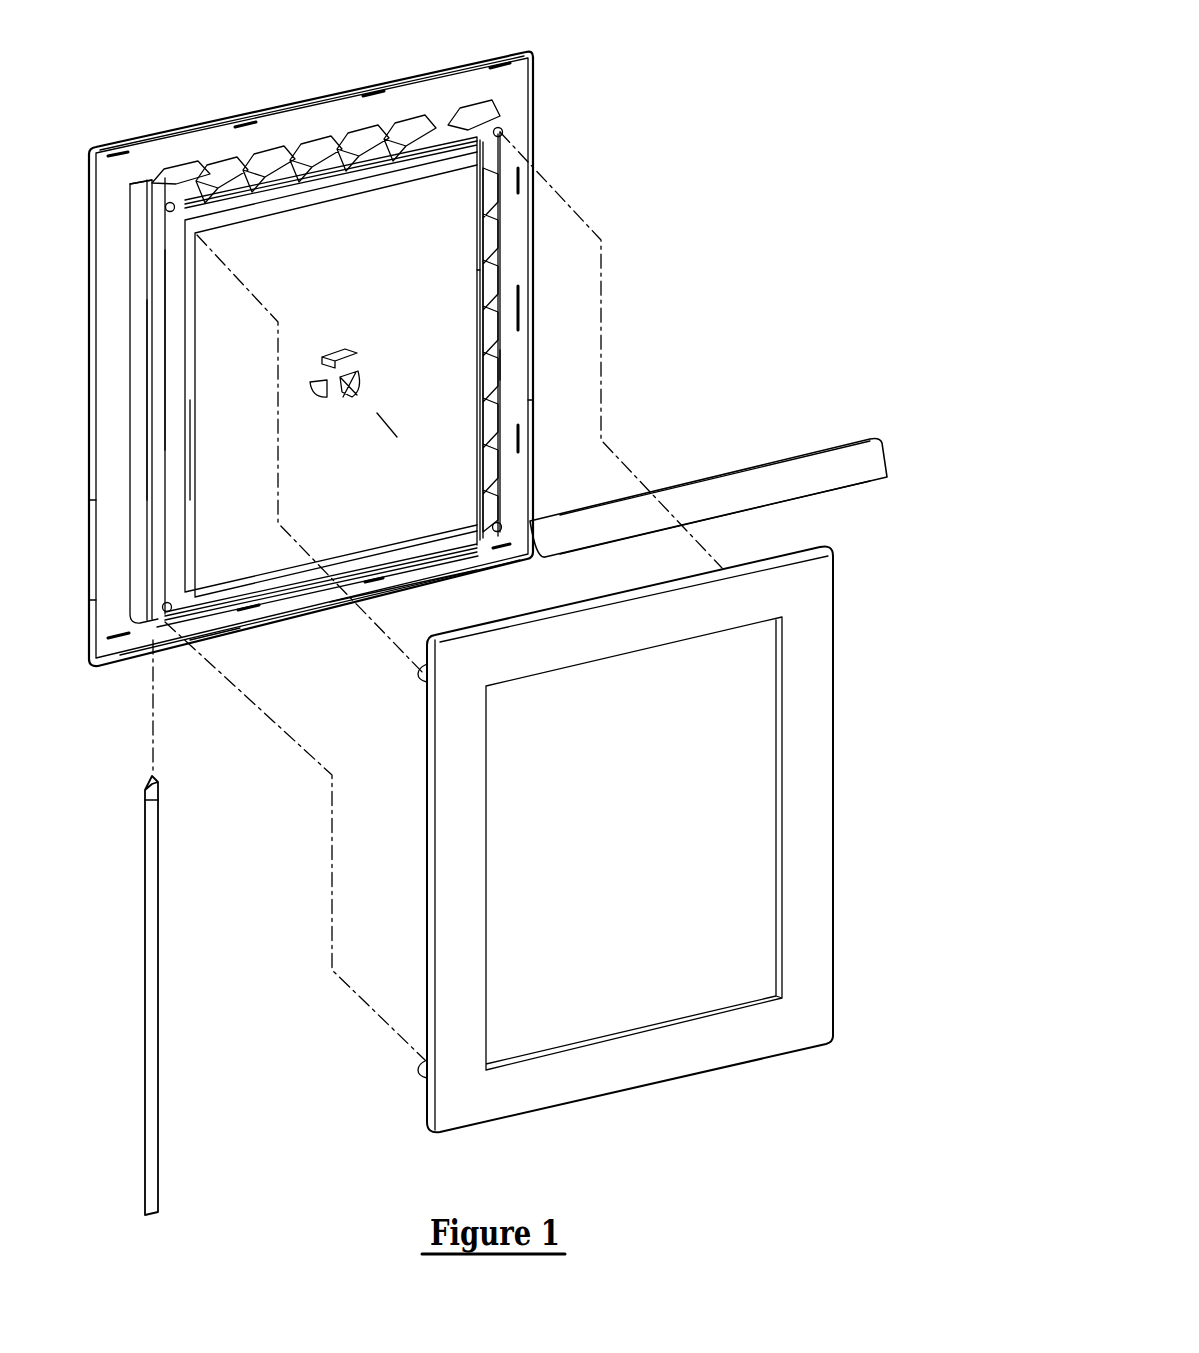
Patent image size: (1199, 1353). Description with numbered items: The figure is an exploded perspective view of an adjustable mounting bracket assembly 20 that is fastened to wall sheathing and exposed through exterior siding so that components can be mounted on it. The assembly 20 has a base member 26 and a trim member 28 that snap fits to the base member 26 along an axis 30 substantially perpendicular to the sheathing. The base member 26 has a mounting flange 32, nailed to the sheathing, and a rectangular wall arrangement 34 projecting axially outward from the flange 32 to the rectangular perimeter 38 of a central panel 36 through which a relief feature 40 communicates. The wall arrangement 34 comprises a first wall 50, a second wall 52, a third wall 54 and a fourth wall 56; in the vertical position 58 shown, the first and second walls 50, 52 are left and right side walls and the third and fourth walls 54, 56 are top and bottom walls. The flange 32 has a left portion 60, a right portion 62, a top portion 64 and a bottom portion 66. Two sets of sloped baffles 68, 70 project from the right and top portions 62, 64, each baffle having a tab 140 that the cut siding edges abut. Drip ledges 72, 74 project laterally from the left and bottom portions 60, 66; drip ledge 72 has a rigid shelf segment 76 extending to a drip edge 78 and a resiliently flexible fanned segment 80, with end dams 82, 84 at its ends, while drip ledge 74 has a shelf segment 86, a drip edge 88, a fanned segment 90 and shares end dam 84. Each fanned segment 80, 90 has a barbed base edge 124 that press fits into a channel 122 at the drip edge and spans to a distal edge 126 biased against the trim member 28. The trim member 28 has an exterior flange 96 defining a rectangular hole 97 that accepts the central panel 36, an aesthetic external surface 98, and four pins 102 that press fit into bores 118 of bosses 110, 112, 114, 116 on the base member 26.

The adjustable mounting bracket assembly 20 is at (745, 181).
The base member 26 is at (546, 67).
The trim member 28 is at (629, 1094).
The axis 30 is at (345, 385).
The mounting flange 32 is at (434, 64).
The rectangular wall arrangement 34 is at (160, 452).
The central panel 36 is at (396, 266).
The rectangular perimeter 38 is at (172, 352).
The relief feature 40 is at (334, 346).
The first wall 50 is at (178, 492).
The second wall 52 is at (482, 284).
The third wall 54 is at (434, 150).
The fourth wall 56 is at (300, 600).
The vertical position 58 is at (627, 326).
The left portion 60 is at (120, 238).
The right portion 62 is at (505, 395).
The top portion 64 is at (308, 115).
The bottom portion 66 is at (410, 578).
The baffles 68 is at (503, 252).
The baffles 70 is at (270, 165).
The drip ledge 72 is at (143, 818).
The drip ledge 74 is at (480, 595).
The shelf segment 76 is at (135, 568).
The drip edge 78 is at (147, 402).
The fanned segment 80 is at (160, 928).
The end dam 82 is at (175, 208).
The end dam 84 is at (172, 585).
The shelf segment 86 is at (290, 614).
The drip edge 88 is at (232, 628).
The fanned segment 90 is at (803, 478).
The exterior flange 96 is at (795, 792).
The rectangular hole 97 is at (745, 732).
The external surface 98 is at (802, 902).
The pins 102 is at (424, 1074).
The boss 110 is at (185, 632).
The boss 112 is at (520, 470).
The boss 114 is at (464, 105).
The boss 116 is at (162, 180).
The bore 118 is at (500, 525).
The channel 122 is at (148, 190).
The base edge 124 is at (742, 472).
The distal edge 126 is at (780, 500).
The tabs 140 is at (500, 362).